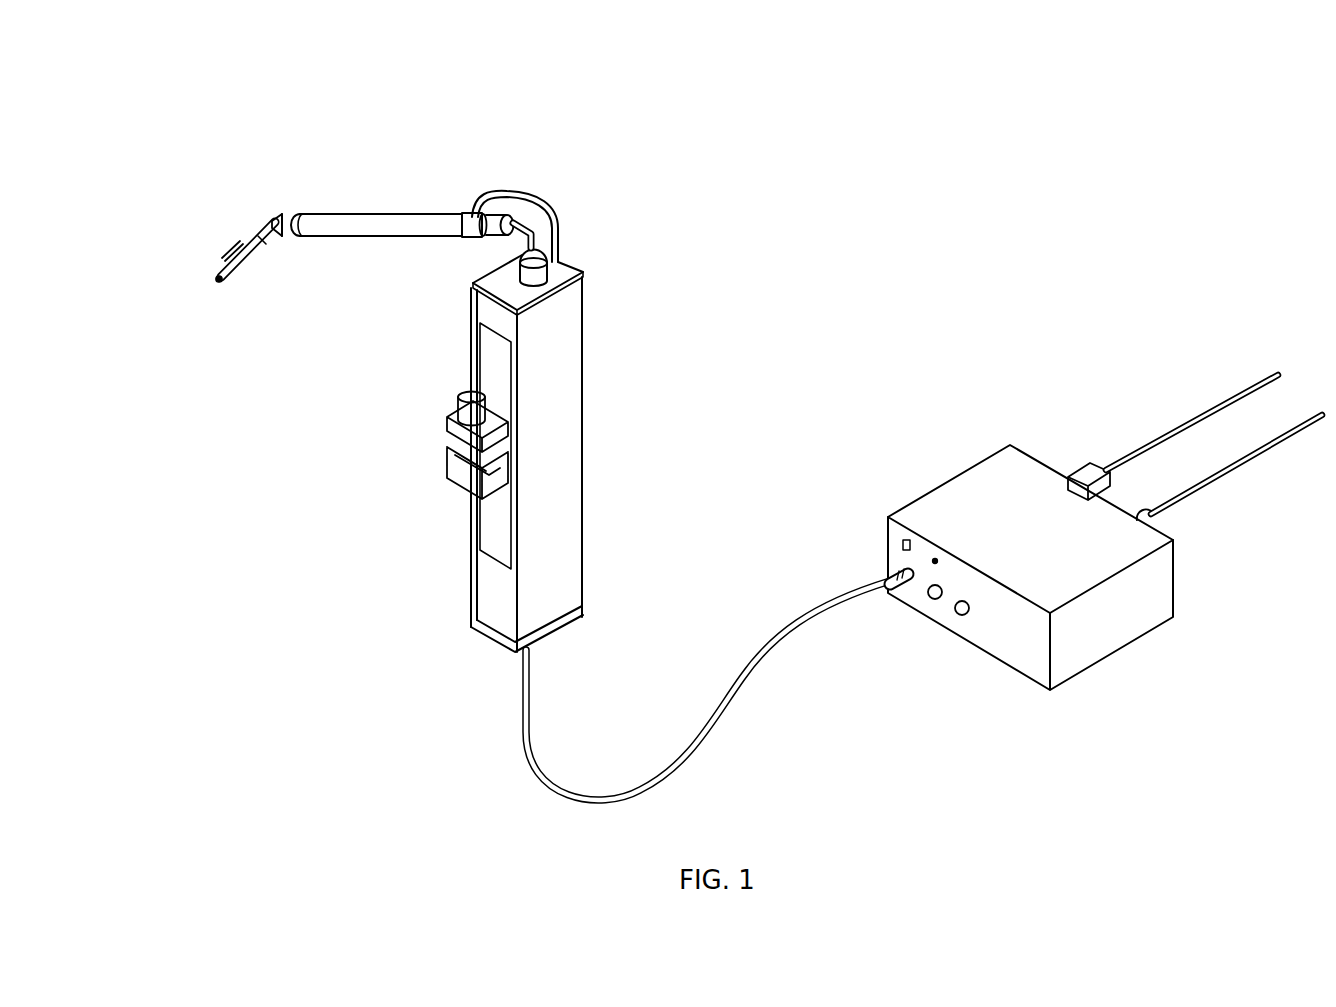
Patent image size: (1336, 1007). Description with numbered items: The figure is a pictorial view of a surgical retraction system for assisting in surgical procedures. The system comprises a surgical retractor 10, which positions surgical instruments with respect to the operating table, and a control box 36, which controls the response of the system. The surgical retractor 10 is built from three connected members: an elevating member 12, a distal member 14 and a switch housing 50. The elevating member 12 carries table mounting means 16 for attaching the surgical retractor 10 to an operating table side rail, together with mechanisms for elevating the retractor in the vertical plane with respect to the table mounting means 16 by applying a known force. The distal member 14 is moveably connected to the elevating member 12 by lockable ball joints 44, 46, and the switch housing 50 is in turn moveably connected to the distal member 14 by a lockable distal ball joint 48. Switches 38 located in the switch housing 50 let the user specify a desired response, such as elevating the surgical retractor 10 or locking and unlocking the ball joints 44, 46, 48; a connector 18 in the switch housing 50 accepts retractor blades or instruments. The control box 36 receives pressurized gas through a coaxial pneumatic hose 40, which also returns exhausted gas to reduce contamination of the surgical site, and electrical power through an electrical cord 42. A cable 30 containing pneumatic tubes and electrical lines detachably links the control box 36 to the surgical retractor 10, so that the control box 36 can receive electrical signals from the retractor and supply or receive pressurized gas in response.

The surgical retractor 10 is at (107, 83).
The elevating member 12 is at (607, 248).
The distal member 14 is at (508, 247).
The table mounting means 16 is at (432, 373).
The connector 18 is at (218, 273).
The cable 30 is at (542, 728).
The control box 36 is at (943, 475).
The switches 38 is at (230, 247).
The pneumatic hose 40 is at (1208, 488).
The electrical cord 42 is at (1177, 430).
The lockable ball joint 44 is at (557, 248).
The lockable ball joint 46 is at (520, 224).
The lockable distal ball joint 48 is at (282, 214).
The switch housing 50 is at (248, 256).